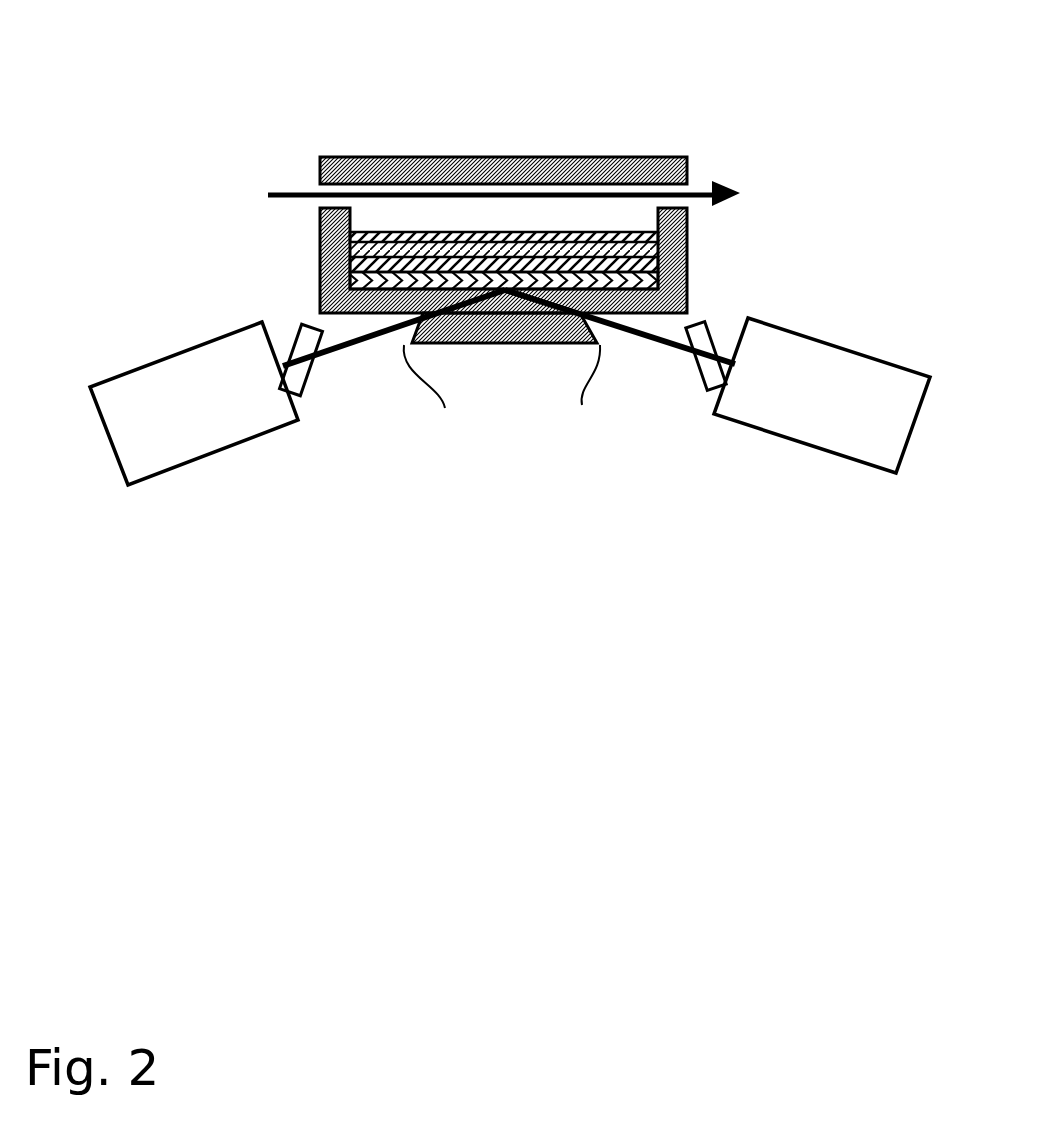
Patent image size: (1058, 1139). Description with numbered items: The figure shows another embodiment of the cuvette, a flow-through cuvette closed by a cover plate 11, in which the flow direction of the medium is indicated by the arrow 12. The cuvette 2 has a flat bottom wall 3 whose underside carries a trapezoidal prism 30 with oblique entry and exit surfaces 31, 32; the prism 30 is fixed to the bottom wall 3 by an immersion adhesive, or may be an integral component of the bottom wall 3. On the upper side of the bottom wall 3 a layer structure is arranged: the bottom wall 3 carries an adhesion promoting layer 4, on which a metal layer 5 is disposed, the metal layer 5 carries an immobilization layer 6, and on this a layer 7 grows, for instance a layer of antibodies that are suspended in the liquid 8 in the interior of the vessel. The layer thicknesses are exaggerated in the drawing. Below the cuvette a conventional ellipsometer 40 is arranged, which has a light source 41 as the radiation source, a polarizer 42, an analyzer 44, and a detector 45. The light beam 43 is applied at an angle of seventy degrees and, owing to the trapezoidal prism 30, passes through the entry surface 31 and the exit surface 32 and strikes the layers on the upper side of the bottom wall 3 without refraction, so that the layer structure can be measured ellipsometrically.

The carrier tray 2 is at (490, 261).
The bottom wall 3 is at (687, 297).
The adhesion promoting layer 4 is at (687, 270).
The metal layer 5 is at (320, 260).
The immobilization layer 6 is at (687, 243).
The layer 7 is at (320, 233).
The liquid 8 is at (410, 215).
The cover plate 11 is at (547, 167).
The arrow 12 is at (295, 192).
The trapezoidal prism 30 is at (506, 413).
The oblique entry surface 31 is at (432, 399).
The oblique exit surface 32 is at (586, 400).
The ellipsometer 40 is at (510, 434).
The light source 41 is at (180, 440).
The polarizer 42 is at (320, 393).
The light beam 43 is at (367, 340).
The analyzer 44 is at (688, 390).
The detector 45 is at (827, 433).